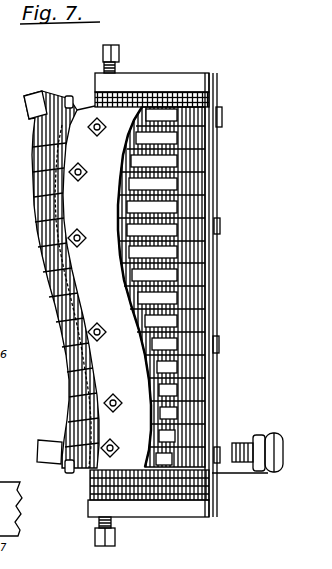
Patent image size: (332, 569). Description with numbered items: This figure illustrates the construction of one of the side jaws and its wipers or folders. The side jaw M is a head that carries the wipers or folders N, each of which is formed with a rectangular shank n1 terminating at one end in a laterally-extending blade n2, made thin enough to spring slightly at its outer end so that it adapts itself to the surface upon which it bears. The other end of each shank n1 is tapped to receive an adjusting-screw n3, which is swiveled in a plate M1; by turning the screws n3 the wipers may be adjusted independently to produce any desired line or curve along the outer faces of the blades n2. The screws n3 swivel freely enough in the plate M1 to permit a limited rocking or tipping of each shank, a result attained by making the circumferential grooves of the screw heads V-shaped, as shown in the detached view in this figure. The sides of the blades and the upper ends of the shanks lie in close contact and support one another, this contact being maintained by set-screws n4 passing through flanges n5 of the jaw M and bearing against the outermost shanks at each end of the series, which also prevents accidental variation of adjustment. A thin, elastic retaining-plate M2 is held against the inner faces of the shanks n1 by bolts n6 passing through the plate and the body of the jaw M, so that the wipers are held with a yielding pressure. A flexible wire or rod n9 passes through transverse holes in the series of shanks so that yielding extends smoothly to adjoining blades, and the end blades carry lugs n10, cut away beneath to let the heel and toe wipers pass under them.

The side jaw M is at (167, 76).
The plate M1 is at (218, 276).
The retaining-plate M2 is at (98, 329).
The wipers or folders N is at (53, 298).
The shank n1 is at (160, 109).
The blade n2 is at (34, 158).
The adjusting-screw n3 is at (219, 166).
The set-screws n4 is at (114, 51).
The flanges n5 is at (146, 523).
The bolts n6 is at (80, 171).
The wire or rod n9 is at (68, 98).
The lug n10 is at (38, 450).